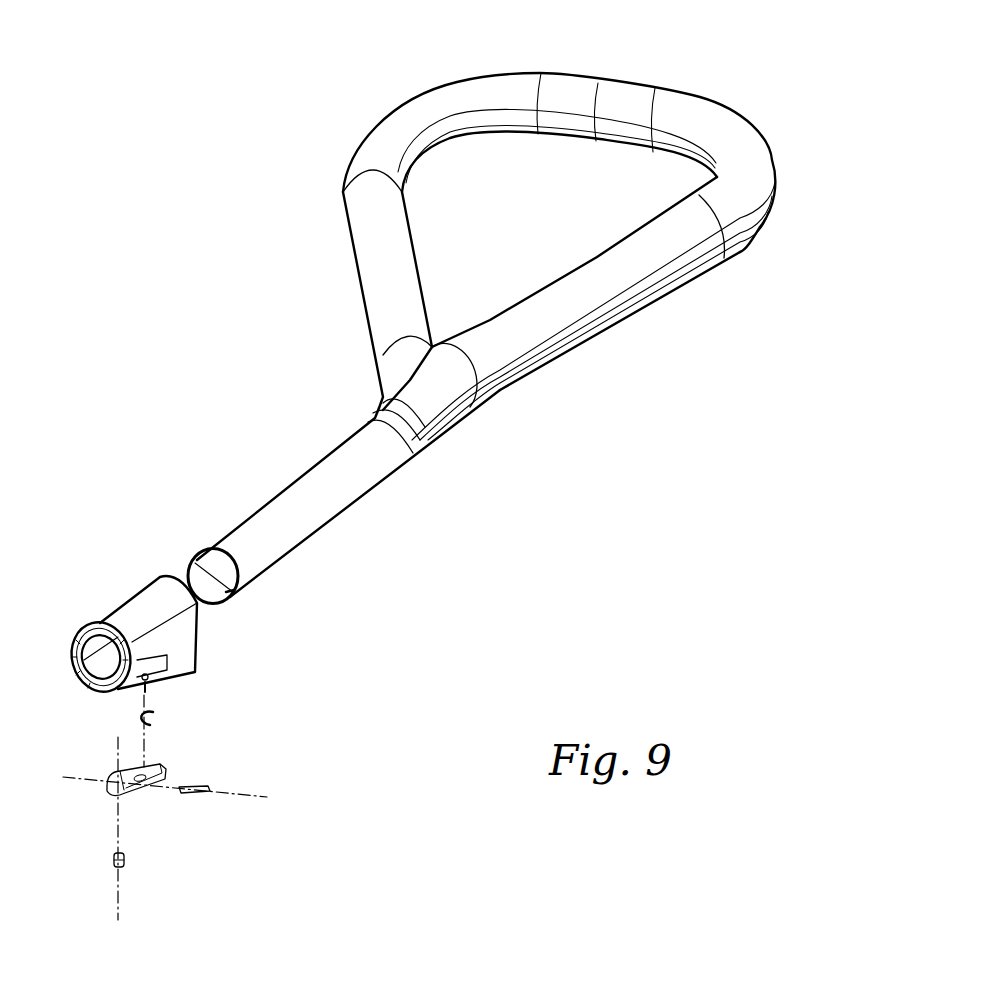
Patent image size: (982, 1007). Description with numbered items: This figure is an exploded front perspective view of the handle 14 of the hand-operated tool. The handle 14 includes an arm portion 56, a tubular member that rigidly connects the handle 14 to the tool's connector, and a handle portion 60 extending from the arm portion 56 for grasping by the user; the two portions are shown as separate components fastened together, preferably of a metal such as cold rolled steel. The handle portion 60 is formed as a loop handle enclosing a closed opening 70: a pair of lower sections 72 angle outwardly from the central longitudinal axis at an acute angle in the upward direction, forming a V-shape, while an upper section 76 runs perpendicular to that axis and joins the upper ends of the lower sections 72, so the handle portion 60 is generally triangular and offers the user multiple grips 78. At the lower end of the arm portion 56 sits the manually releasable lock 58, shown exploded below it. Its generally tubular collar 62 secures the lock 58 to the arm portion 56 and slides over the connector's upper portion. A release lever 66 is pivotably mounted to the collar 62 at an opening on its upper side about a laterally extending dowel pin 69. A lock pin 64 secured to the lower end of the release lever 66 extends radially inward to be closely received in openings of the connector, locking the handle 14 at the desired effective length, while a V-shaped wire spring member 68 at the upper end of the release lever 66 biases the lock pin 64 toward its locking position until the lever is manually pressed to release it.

The handle 14 is at (190, 386).
The arm portion 56 is at (329, 526).
The manually releasable lock 58 is at (130, 610).
The handle portion 60 is at (582, 337).
The collar 62 is at (197, 627).
The lock pin 64 is at (125, 858).
The release lever 66 is at (107, 797).
The spring member 68 is at (153, 712).
The dowel pin 69 is at (207, 787).
The closed opening 70 is at (531, 251).
The lower sections 72 is at (361, 279).
The upper section 76 is at (630, 82).
The grips 78 is at (578, 143).